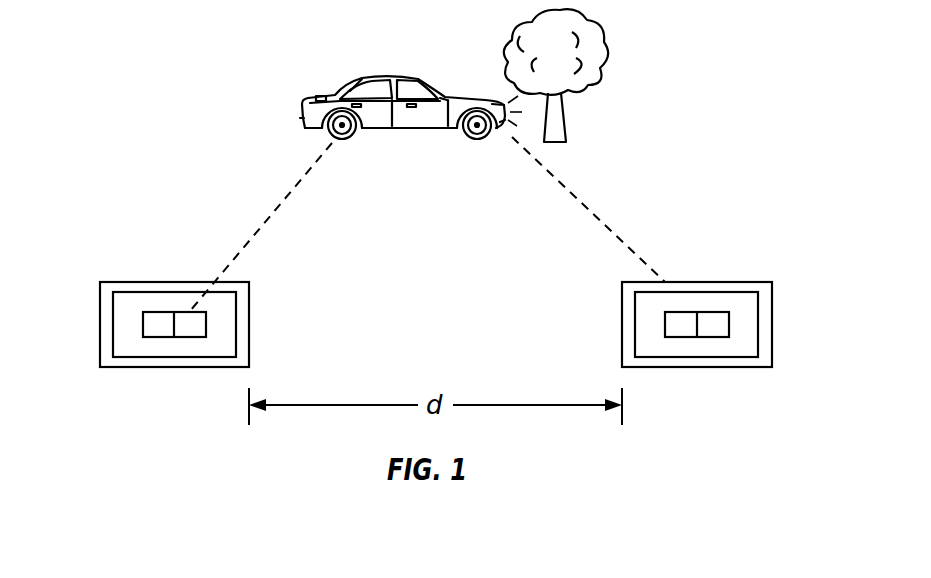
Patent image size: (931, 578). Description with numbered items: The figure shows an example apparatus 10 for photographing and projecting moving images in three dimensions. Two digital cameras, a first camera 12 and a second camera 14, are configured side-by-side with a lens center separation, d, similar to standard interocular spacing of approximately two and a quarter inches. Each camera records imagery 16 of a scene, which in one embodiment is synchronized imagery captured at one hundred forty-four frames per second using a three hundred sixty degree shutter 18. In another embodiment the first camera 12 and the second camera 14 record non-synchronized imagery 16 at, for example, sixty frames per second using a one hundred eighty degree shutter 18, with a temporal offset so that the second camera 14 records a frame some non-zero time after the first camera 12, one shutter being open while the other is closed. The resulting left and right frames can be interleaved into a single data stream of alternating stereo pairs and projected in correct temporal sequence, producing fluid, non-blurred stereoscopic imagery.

The vehicle sensing system 10 is at (230, 46).
The first camera 12 is at (129, 262).
The second camera 14 is at (730, 261).
The imagery 16 is at (623, 37).
The shutter 18 is at (155, 325).